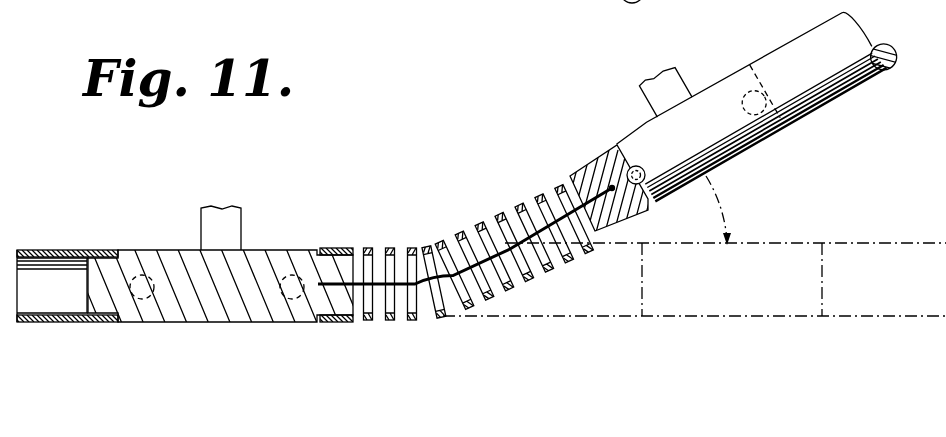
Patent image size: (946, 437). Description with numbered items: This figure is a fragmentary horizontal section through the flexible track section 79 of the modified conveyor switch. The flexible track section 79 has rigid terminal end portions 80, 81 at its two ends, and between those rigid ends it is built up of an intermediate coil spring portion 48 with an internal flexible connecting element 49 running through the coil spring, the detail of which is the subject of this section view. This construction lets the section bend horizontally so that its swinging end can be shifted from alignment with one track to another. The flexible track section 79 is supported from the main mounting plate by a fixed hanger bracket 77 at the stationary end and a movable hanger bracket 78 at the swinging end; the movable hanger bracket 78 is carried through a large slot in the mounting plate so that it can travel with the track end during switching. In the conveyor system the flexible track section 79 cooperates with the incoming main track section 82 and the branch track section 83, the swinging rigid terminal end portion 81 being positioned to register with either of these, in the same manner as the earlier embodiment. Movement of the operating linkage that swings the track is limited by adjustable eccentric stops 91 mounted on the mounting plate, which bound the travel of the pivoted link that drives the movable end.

The intermediate coil spring portion 48 is at (482, 224).
The internal flexible connecting element 49 is at (410, 248).
The fixed hanger bracket 77 is at (212, 226).
The movable hanger bracket 78 is at (673, 88).
The flexible track section 79 is at (514, 192).
The rigid terminal end portion 80 is at (270, 249).
The rigid terminal end portion 81 is at (584, 166).
The main track section 82 is at (897, 262).
The branch track section 83 is at (838, 92).
The adjustable eccentric stop 91 is at (653, 0).